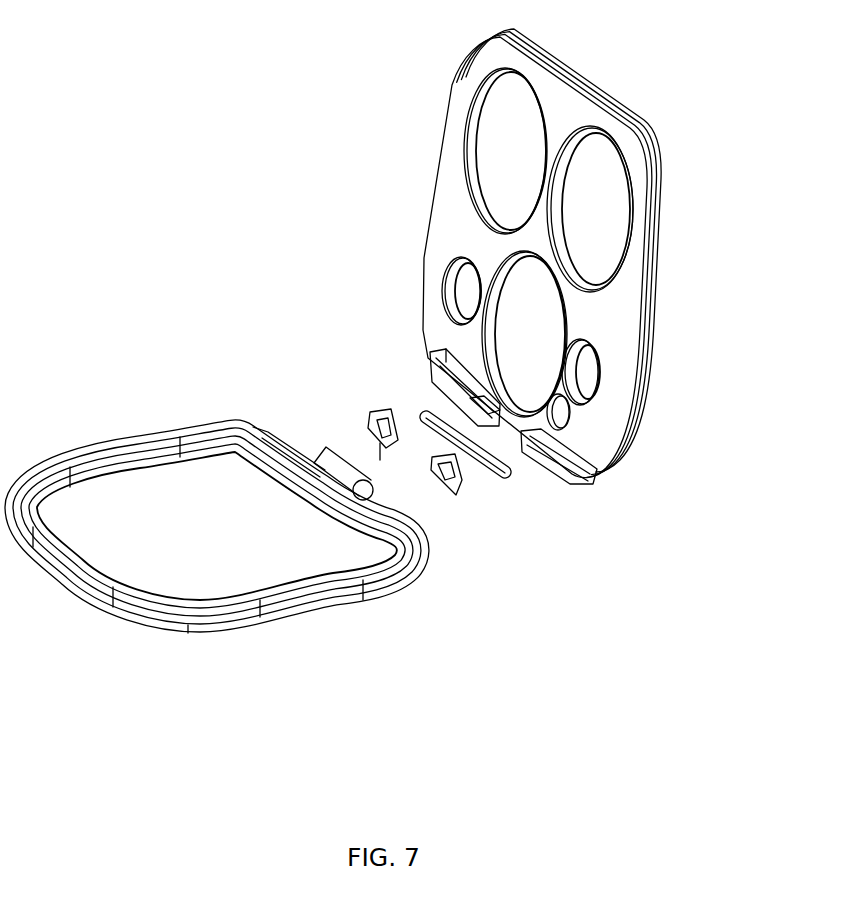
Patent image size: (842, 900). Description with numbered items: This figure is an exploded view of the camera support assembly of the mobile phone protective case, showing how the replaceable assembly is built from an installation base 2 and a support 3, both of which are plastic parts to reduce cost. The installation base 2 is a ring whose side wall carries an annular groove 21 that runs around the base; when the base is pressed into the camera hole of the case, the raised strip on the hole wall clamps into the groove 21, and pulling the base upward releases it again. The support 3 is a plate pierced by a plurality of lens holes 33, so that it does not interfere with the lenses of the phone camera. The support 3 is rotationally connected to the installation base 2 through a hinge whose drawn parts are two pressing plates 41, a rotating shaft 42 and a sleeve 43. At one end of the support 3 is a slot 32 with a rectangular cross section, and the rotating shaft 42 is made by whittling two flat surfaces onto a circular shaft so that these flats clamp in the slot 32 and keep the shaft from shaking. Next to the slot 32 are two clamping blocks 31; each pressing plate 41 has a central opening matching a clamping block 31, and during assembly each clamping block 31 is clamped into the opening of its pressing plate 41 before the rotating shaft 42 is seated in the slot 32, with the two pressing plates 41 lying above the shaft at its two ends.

The installation base 2 is at (125, 622).
The groove 21 is at (187, 630).
The support 3 is at (620, 112).
The clamping block 31 is at (533, 450).
The slot 32 is at (492, 418).
The lens holes 33 is at (533, 332).
The pressing plate 41 is at (455, 495).
The rotating shaft 42 is at (487, 463).
The sleeve 43 is at (360, 492).